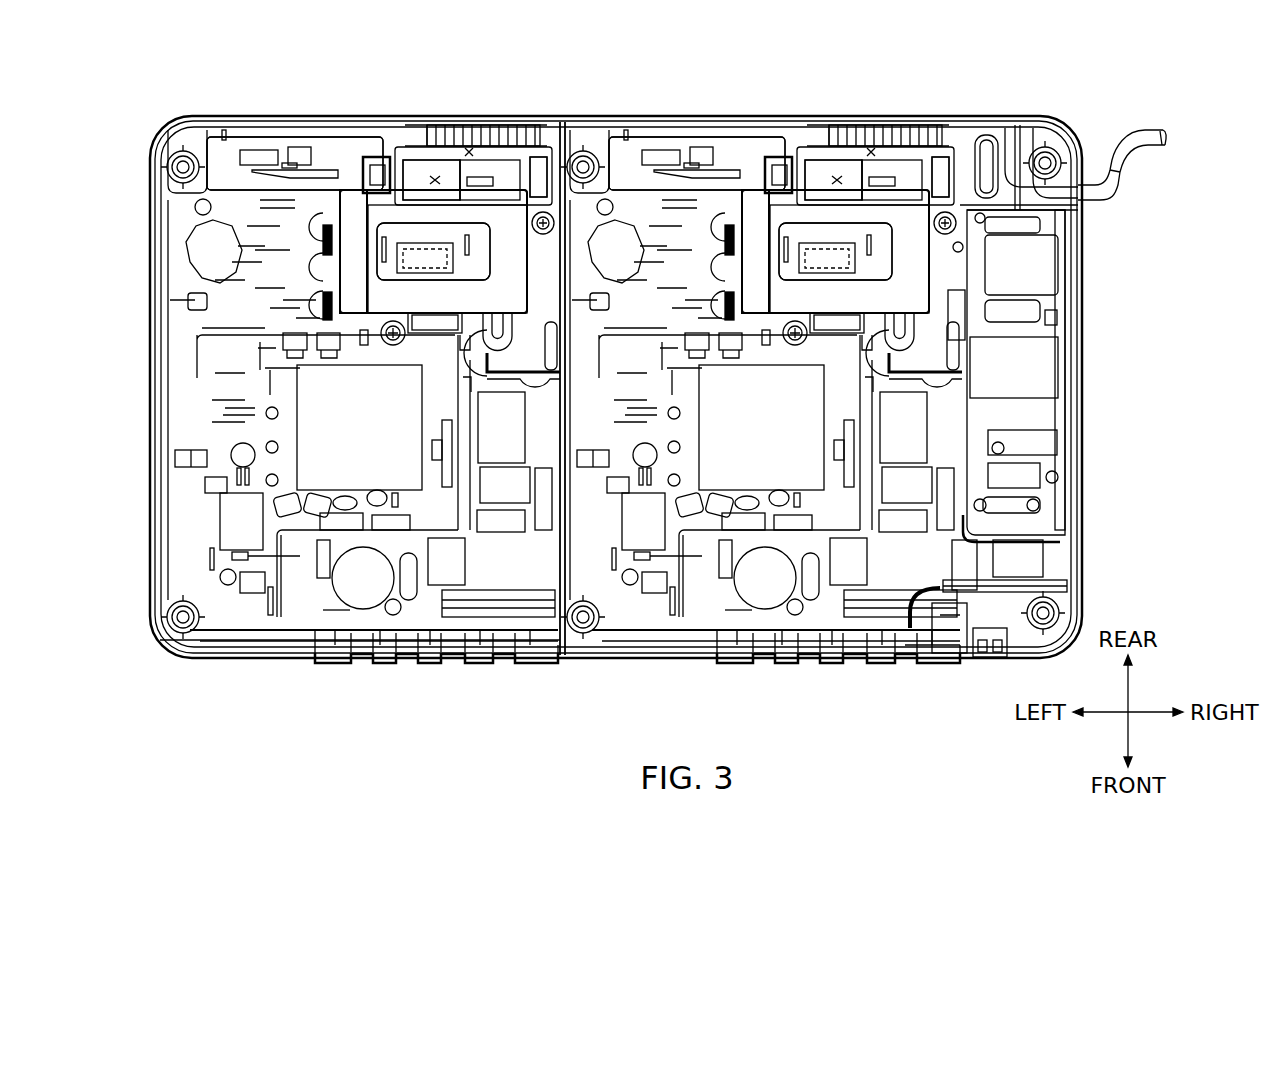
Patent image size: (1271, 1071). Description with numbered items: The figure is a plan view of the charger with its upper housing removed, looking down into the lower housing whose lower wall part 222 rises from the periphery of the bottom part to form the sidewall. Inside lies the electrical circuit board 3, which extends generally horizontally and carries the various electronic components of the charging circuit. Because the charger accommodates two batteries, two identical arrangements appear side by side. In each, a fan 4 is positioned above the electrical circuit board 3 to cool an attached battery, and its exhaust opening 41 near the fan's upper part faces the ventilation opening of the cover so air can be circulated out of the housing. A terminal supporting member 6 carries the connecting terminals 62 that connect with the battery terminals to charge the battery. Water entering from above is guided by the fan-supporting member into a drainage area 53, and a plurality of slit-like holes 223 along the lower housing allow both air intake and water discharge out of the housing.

The electrical circuit board 3 is at (233, 143).
The terminal supporting member 6 is at (365, 187).
The exhaust opening 41 is at (400, 230).
The drainage area 53 is at (435, 180).
The slit-like holes (orifices) 223 is at (530, 128).
The fan 4 is at (537, 165).
The connecting terminals 62 is at (378, 245).
The lower wall part 222 is at (245, 655).